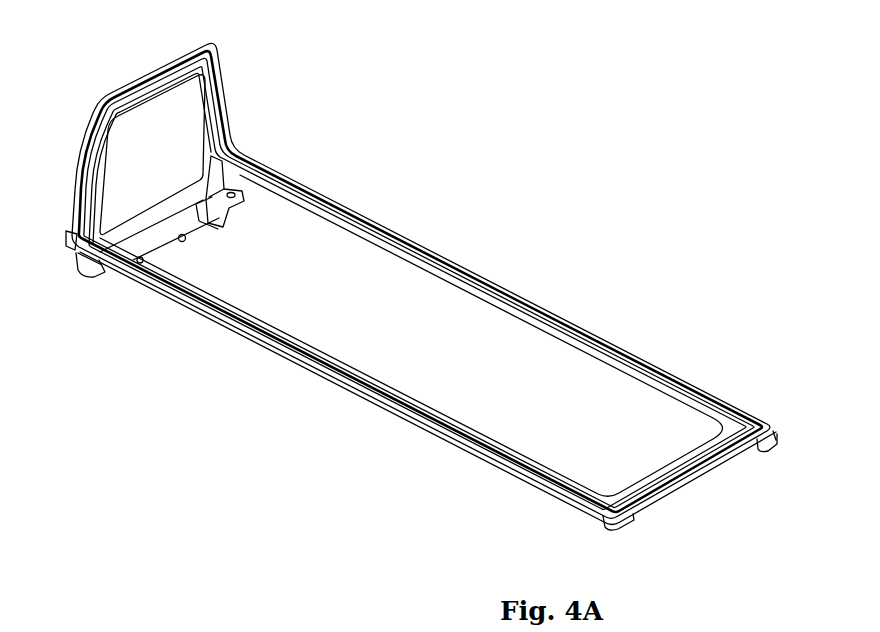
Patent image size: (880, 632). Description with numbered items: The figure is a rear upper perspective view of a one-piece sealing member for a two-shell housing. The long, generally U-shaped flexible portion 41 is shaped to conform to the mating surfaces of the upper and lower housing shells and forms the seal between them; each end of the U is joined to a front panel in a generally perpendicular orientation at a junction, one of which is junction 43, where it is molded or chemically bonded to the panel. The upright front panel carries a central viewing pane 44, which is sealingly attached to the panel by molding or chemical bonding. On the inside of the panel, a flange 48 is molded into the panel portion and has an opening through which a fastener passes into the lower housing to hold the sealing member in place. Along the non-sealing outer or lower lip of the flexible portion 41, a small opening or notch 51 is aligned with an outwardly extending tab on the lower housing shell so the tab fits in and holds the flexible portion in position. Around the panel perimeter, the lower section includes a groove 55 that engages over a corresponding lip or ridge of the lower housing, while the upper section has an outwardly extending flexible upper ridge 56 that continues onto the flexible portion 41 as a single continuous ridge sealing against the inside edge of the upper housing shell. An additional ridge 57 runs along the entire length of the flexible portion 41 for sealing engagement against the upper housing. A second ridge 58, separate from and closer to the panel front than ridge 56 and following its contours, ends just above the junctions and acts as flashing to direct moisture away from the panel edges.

The flexible portion 41 is at (232, 330).
The junction 43 is at (243, 150).
The viewing pane 44 is at (190, 117).
The flange 48 is at (233, 201).
The opening or notch 51 is at (660, 502).
The groove 55 is at (90, 272).
The upper ridge 56 is at (227, 51).
The additional ridge 57 is at (740, 412).
The second ridge 58 is at (70, 232).